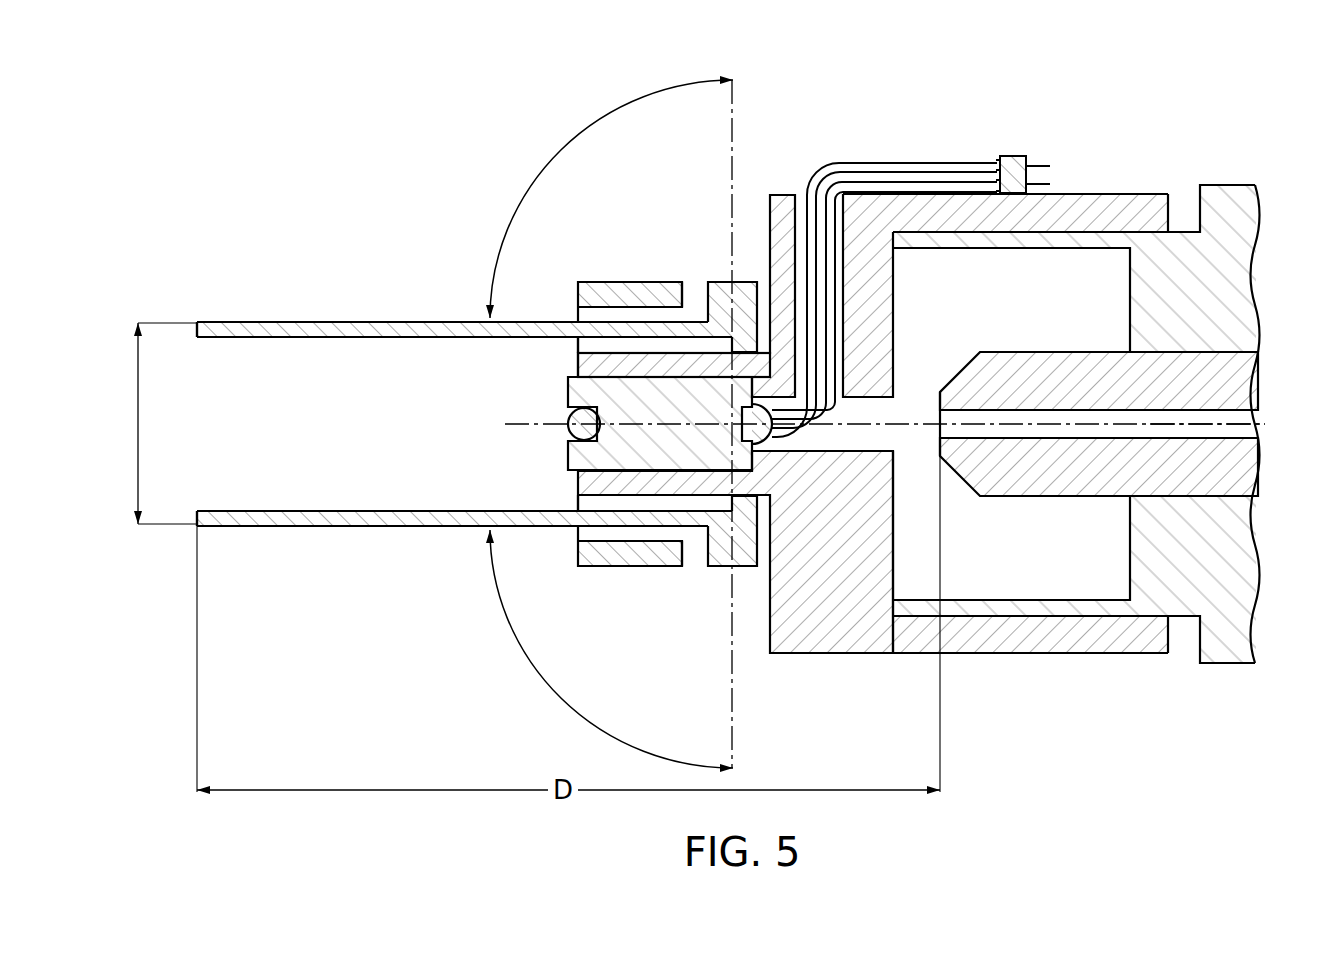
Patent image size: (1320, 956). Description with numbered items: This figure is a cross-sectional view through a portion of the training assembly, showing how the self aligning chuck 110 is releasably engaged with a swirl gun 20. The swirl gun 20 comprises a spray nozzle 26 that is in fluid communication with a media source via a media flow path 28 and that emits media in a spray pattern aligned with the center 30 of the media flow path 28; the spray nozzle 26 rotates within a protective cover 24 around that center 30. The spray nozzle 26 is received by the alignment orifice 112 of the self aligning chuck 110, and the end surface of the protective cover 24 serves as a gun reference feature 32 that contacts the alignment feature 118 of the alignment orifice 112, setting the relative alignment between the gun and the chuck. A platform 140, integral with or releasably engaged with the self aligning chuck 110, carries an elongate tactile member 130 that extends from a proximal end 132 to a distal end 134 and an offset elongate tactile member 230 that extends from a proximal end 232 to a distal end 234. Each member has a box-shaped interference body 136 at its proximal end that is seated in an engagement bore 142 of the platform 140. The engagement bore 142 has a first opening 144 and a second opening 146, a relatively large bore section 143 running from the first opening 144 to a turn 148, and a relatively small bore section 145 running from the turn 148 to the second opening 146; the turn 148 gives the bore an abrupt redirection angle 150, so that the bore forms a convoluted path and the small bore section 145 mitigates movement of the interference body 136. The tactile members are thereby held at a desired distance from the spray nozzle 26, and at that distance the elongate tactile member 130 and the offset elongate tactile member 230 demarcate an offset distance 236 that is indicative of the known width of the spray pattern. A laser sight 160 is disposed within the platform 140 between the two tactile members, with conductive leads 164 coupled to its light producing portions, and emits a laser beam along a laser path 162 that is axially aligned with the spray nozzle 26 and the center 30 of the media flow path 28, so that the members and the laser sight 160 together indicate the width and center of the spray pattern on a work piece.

The swirl gun 20 is at (1230, 193).
The protective cover 24 is at (987, 240).
The spray nozzle 26 is at (1052, 357).
The media flow path 28 is at (1261, 428).
The center of the media flow path 30 is at (913, 423).
The gun reference feature 32 is at (896, 610).
The self aligning chuck 110 is at (1116, 203).
The alignment orifice 112 is at (895, 320).
The alignment feature 118 is at (894, 532).
The elongate tactile member 130 is at (400, 322).
The proximal end 132 is at (760, 278).
The distal end 134 is at (207, 316).
The interference body 136 is at (718, 292).
The platform 140 is at (576, 367).
The engagement bore 142 is at (578, 345).
The relatively large bore section 143 is at (680, 295).
The first opening 144 is at (682, 282).
The relatively small bore section 145 is at (594, 284).
The second opening 146 is at (578, 300).
The turn 148 is at (697, 306).
The redirection angle 150 is at (611, 424).
The laser sight 160 is at (567, 392).
The laser path 162 is at (513, 425).
The conductive leads 164 is at (922, 161).
The offset elongate tactile member 230 is at (400, 526).
The proximal end 232 is at (760, 570).
The distal end 234 is at (207, 532).
The offset distance 236 is at (158, 423).